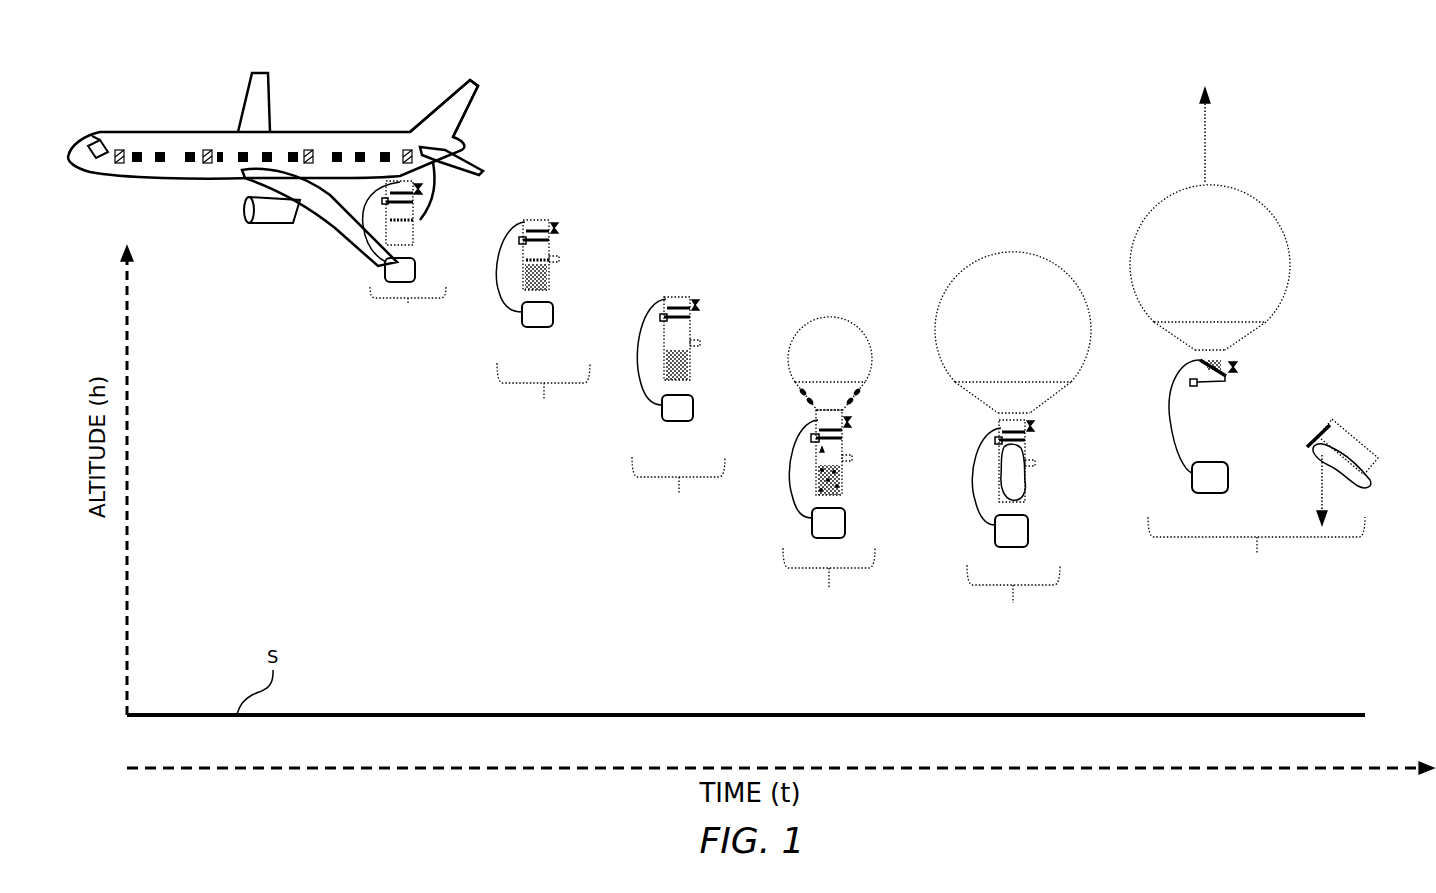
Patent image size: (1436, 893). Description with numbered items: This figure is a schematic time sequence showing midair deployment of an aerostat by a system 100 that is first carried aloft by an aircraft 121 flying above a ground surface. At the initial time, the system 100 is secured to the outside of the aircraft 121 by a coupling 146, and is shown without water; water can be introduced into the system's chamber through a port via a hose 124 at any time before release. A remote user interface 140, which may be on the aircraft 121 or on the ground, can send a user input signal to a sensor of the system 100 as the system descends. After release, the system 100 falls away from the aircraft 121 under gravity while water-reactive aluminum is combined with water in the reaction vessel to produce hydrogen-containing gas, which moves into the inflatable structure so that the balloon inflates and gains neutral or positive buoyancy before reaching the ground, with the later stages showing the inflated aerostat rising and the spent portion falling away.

The system 100 is at (420, 240).
The aircraft 121 is at (478, 110).
The hose 124 is at (435, 202).
The remote user interface 140 is at (92, 142).
The coupling 146 is at (392, 181).